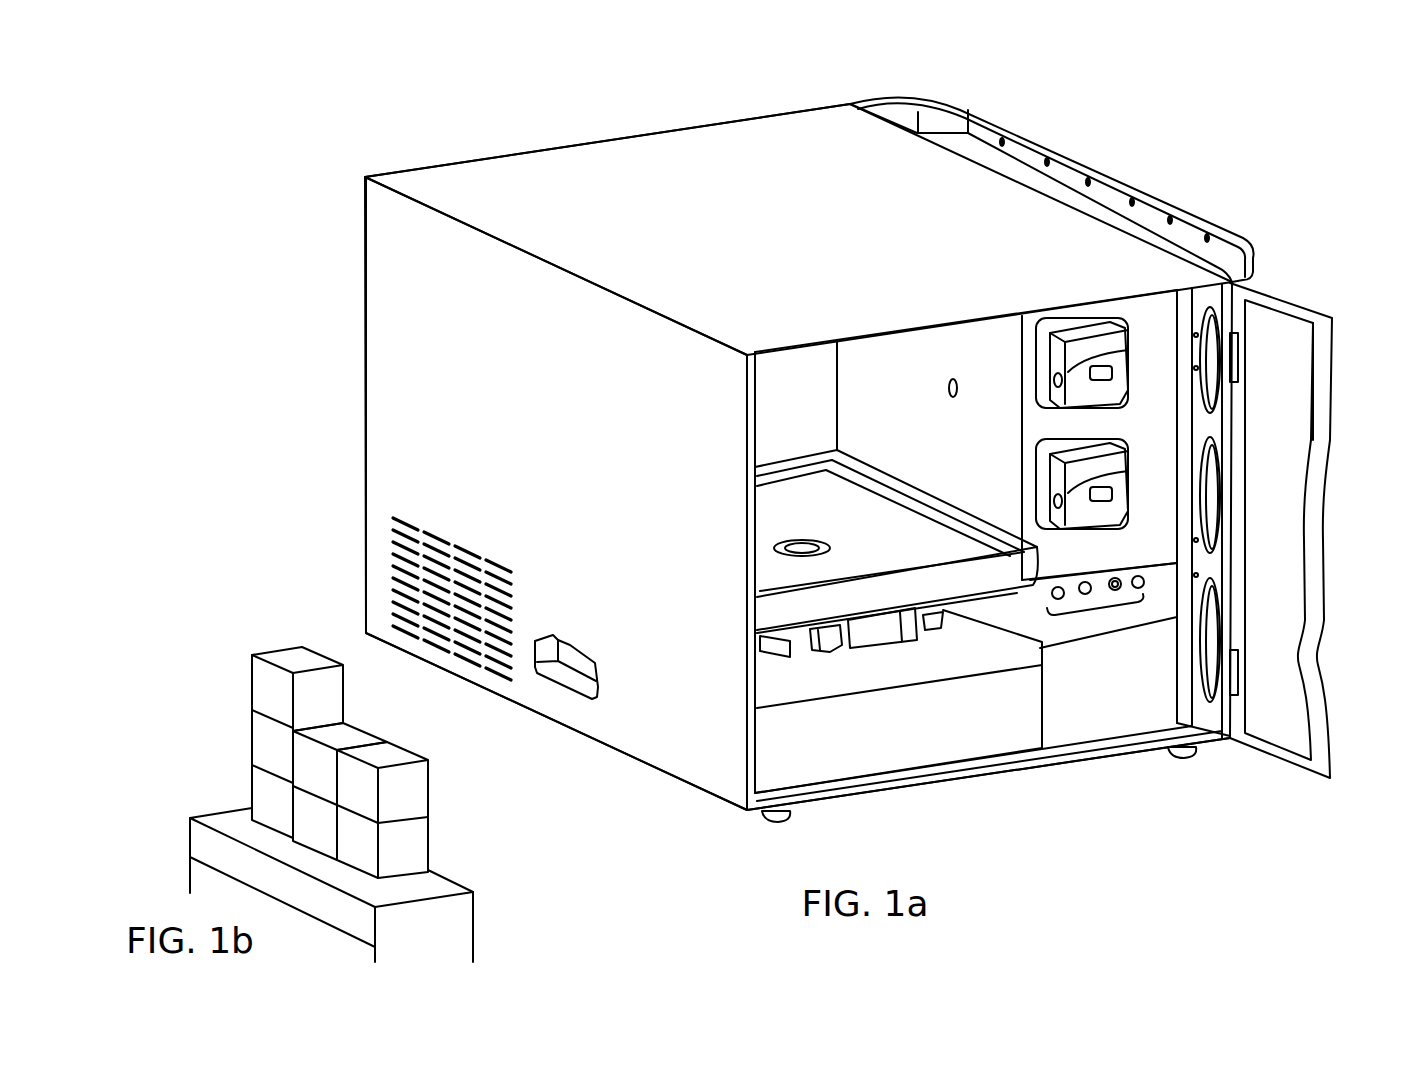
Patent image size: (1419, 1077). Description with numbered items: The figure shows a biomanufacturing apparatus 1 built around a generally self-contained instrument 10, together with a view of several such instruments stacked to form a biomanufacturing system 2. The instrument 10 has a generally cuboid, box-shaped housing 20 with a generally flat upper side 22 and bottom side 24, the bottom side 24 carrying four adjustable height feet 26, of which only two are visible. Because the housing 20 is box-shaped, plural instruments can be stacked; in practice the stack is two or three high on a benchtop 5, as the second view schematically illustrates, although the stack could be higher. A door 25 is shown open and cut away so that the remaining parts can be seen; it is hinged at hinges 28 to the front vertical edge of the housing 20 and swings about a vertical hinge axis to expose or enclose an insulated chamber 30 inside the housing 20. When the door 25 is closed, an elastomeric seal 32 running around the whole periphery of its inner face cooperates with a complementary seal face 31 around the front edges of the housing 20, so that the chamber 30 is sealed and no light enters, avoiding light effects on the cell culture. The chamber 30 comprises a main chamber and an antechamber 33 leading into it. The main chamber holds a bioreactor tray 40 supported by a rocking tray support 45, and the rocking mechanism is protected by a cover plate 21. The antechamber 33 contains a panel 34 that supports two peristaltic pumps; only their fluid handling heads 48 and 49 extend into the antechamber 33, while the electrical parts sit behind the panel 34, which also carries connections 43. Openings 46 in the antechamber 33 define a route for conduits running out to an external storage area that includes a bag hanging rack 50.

In FIG. 1A, the biomanufacturing apparatus 1 is at (330, 88).
In FIG. 1B, the biomanufacturing system 2 is at (212, 687).
In FIG. 1B, the benchtop 5 is at (232, 816).
In FIG. 1A, the instrument 10 is at (768, 97).
In FIG. 1B, the instrument 10 is at (289, 712).
In FIG. 1A, the housing 20 is at (366, 362).
In FIG. 1A, the cover plate 21 is at (978, 725).
In FIG. 1A, the upper side 22 is at (645, 157).
In FIG. 1A, the bottom side 24 is at (637, 769).
In FIG. 1A, the door 25 is at (1302, 518).
In FIG. 1A, the adjustable height feet 26 is at (772, 821).
In FIG. 1A, the hinges 28 is at (1238, 357).
In FIG. 1A, the insulated chamber 30 is at (813, 411).
In FIG. 1A, the seal face 31 is at (1252, 535).
In FIG. 1A, the elastomeric seal 32 is at (1300, 322).
In FIG. 1A, the antechamber 33 is at (1170, 338).
In FIG. 1A, the panel 34 is at (1148, 470).
In FIG. 1A, the bioreactor tray 40 is at (892, 592).
In FIG. 1A, the connections 43 is at (1095, 608).
In FIG. 1A, the rocking tray support 45 is at (800, 652).
In FIG. 1A, the openings 46 is at (1212, 402).
In FIG. 1A, the fluid handling head 48 is at (1118, 390).
In FIG. 1A, the fluid handling head 49 is at (1118, 503).
In FIG. 1A, the bag hanging rack 50 is at (1115, 185).